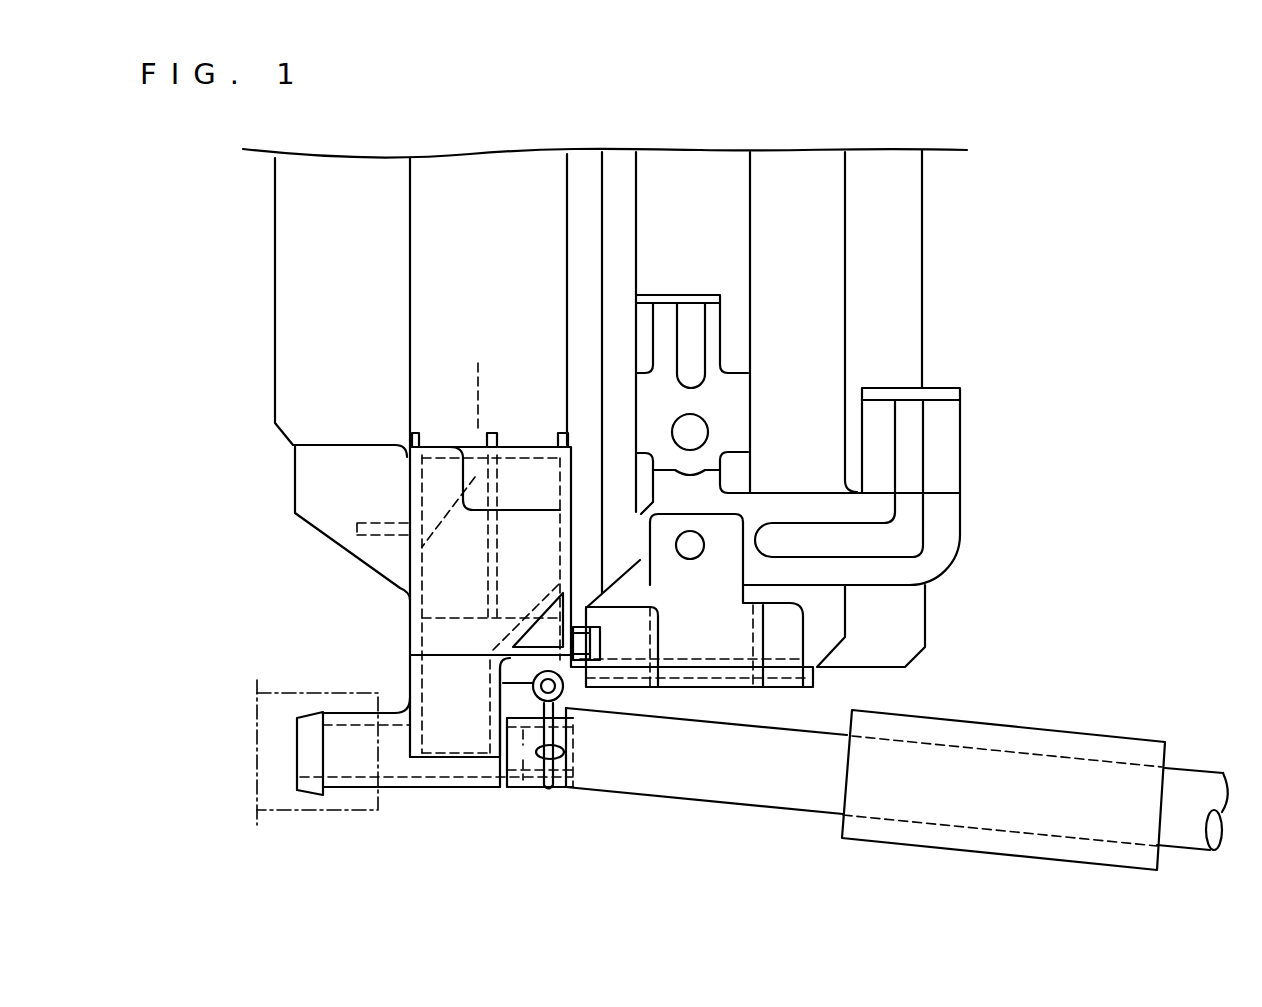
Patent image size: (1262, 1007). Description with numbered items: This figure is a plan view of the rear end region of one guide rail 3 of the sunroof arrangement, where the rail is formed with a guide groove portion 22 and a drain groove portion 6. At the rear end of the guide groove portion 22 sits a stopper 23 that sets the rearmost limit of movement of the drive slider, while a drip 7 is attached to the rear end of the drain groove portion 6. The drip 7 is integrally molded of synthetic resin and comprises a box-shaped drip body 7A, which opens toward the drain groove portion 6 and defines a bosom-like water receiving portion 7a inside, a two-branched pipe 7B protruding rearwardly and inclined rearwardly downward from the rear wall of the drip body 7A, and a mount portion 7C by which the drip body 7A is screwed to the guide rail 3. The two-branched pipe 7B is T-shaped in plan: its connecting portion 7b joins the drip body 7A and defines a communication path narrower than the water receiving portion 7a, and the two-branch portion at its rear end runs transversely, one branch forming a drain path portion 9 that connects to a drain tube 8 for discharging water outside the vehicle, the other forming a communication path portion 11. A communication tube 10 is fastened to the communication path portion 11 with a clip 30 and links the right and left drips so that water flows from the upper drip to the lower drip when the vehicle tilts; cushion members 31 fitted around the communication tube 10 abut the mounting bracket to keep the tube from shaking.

The guide rail 3 is at (930, 257).
The drain groove portion 6 is at (452, 298).
The drip 7 is at (215, 547).
The drip body 7A is at (435, 588).
The two-branched pipe 7B is at (398, 673).
The mount portion 7C is at (330, 454).
The water receiving portion 7a is at (480, 381).
The connecting portion 7b is at (452, 693).
The drain tube 8 is at (275, 790).
The drain path portion 9 is at (350, 763).
The communication tube 10 is at (702, 782).
The communication path portion 11 is at (525, 790).
The guide groove portion 22 is at (808, 223).
The stopper 23 is at (948, 512).
The clip 30 is at (573, 778).
The cushion member 31 is at (1012, 737).